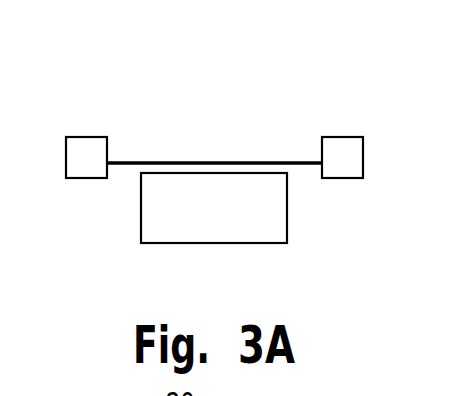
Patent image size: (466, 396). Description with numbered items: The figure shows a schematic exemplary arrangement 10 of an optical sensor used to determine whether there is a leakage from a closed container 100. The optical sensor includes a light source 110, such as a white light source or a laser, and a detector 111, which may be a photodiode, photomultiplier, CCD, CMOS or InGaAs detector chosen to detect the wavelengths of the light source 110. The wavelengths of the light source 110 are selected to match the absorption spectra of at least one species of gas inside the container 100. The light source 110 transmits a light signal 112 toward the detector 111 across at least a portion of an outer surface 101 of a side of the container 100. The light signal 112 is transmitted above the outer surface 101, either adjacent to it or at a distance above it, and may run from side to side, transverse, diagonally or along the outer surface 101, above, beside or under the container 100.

The arrangement 10 is at (192, 89).
The closed container 100 is at (143, 259).
The outer surface 101 is at (279, 181).
The light source 110 is at (92, 116).
The detector 111 is at (330, 116).
The light signal 112 is at (212, 141).